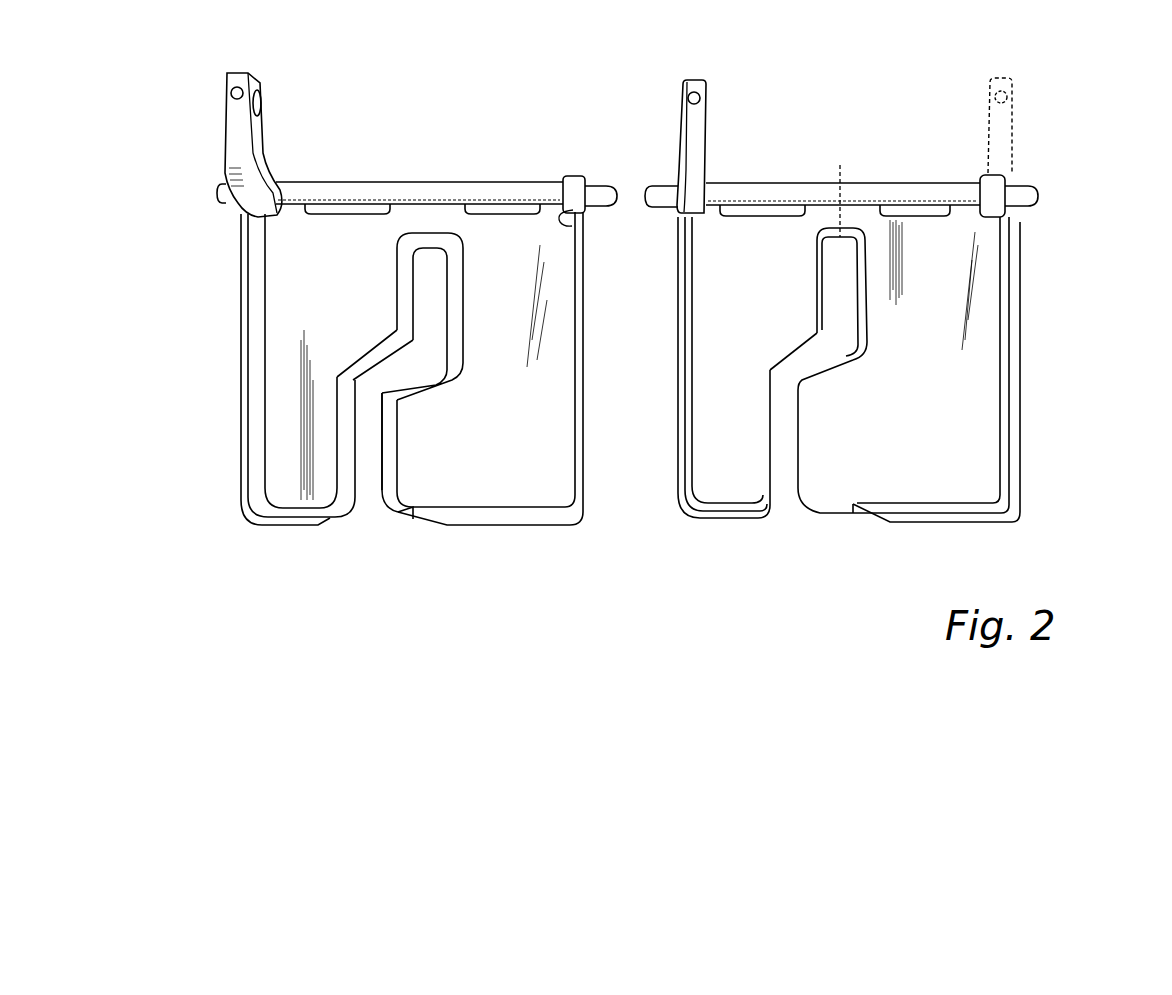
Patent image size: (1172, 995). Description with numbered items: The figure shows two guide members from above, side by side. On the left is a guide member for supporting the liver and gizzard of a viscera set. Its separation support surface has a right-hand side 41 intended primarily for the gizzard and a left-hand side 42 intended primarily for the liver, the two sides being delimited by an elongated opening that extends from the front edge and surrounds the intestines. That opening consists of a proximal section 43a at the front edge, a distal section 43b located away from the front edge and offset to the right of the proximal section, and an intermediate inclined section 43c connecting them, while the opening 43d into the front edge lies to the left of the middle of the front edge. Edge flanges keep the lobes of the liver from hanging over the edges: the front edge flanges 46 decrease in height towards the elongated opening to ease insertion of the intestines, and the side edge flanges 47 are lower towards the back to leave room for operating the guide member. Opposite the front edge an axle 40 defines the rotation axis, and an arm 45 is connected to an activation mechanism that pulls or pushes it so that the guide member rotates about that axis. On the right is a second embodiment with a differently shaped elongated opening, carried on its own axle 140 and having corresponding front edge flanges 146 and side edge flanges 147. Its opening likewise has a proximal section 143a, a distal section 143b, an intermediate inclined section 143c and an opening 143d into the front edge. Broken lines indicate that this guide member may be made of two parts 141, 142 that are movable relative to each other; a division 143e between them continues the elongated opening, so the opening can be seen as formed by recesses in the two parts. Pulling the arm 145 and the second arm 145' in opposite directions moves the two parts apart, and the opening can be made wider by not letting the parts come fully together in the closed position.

The axle 40 is at (600, 187).
The right-hand side of the separation support surface 41 is at (381, 393).
The left-hand side of the separation support surface 42 is at (298, 337).
The proximal section 43a is at (373, 445).
The distal section 43b is at (430, 292).
The intermediate inclined section 43c is at (380, 374).
The opening of the elongated opening into the front edge 43d is at (366, 492).
The arm 45 is at (258, 132).
The front edge flange 46 is at (291, 513).
The side edge flange 47 is at (245, 400).
The axle 140 is at (648, 200).
The first part of the guide member 141 is at (862, 342).
The second part of the guide member 142 is at (723, 286).
The proximal section 143a is at (783, 438).
The distal section 143b is at (843, 285).
The intermediate inclined section 143c is at (818, 352).
The opening of the elongated opening into the front edge 143d is at (783, 490).
The division 143e is at (840, 198).
The arm 145 is at (727, 134).
The second arm 145' is at (1042, 125).
The front edge flange 146 is at (718, 518).
The side edge flange 147 is at (676, 478).